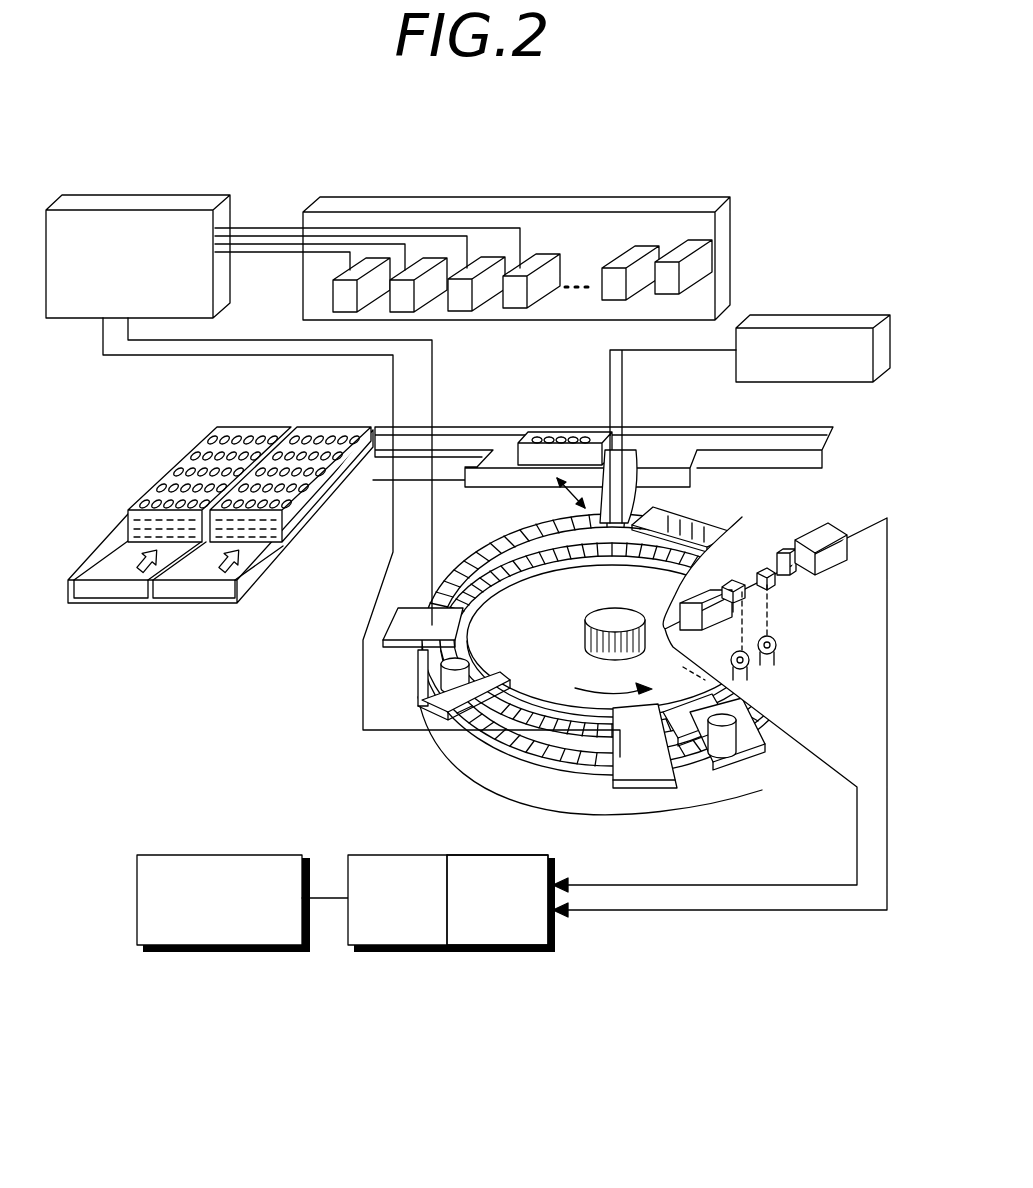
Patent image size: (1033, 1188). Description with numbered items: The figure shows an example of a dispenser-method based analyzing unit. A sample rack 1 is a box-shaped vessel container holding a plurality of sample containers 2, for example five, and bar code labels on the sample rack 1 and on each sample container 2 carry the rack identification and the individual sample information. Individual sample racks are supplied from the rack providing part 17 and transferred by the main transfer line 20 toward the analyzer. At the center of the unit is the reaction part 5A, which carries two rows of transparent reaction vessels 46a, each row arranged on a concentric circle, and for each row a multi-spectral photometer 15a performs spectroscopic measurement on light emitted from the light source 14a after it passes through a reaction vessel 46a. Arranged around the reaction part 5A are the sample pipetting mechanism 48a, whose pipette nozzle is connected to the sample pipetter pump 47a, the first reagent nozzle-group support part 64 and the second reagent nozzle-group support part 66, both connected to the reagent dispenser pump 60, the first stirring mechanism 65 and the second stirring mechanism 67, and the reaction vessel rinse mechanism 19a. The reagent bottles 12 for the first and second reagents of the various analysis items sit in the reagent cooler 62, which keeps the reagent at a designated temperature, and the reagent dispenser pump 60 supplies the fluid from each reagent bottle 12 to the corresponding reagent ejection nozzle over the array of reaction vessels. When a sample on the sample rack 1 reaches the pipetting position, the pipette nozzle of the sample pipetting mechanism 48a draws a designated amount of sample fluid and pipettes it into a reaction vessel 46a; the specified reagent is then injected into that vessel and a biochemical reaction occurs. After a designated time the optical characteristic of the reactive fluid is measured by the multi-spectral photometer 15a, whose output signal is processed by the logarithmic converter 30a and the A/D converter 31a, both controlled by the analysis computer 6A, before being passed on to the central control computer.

The reagent dispenser pump 60 is at (162, 208).
The reagent cooler 62 is at (683, 207).
The reagent bottle 12 is at (537, 253).
The sample pipetter pump 47a is at (820, 320).
The rack providing part 17 is at (268, 570).
The sample rack 1 is at (138, 522).
The sample container 2 is at (233, 437).
The main transfer line 20 is at (795, 437).
The reaction vessel 46a is at (507, 535).
The reaction part 5A is at (472, 765).
The sample pipetting mechanism 48a is at (642, 508).
The second reagent nozzle-group support part 66 is at (412, 645).
The second stirring mechanism 67 is at (415, 740).
The first reagent nozzle-group support part 64 is at (655, 790).
The first stirring mechanism 65 is at (740, 773).
The reaction vessel rinse mechanism 19a is at (745, 517).
The multi-spectral photometer 15a is at (830, 560).
The light source 14a is at (780, 648).
The analysis computer 6A is at (218, 953).
The A/D converter 31a is at (393, 953).
The logarithmic converter 30a is at (508, 953).